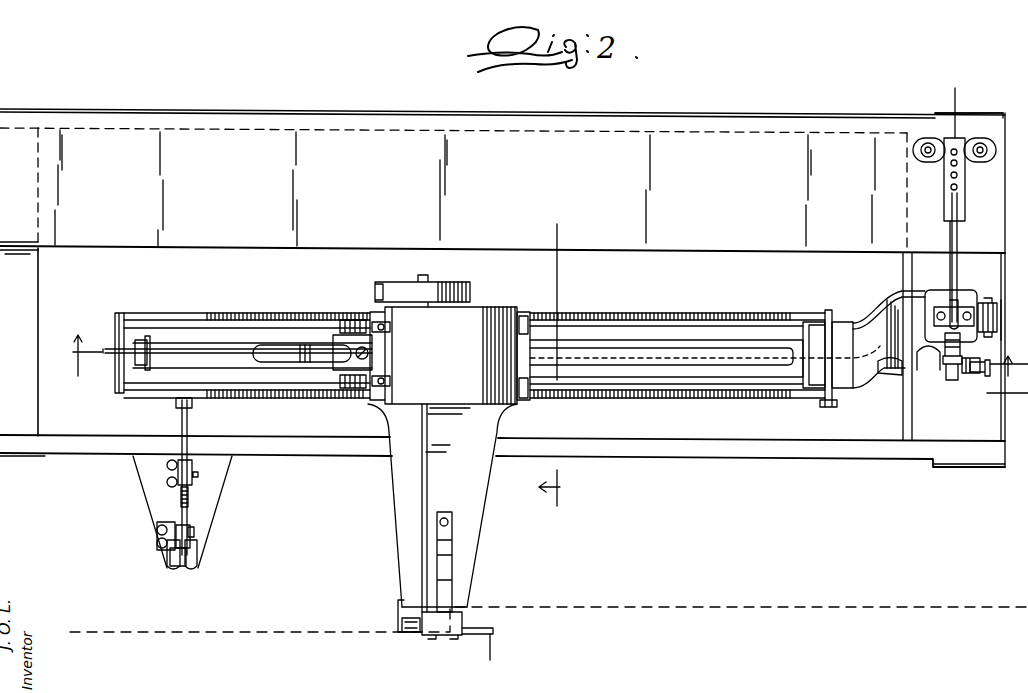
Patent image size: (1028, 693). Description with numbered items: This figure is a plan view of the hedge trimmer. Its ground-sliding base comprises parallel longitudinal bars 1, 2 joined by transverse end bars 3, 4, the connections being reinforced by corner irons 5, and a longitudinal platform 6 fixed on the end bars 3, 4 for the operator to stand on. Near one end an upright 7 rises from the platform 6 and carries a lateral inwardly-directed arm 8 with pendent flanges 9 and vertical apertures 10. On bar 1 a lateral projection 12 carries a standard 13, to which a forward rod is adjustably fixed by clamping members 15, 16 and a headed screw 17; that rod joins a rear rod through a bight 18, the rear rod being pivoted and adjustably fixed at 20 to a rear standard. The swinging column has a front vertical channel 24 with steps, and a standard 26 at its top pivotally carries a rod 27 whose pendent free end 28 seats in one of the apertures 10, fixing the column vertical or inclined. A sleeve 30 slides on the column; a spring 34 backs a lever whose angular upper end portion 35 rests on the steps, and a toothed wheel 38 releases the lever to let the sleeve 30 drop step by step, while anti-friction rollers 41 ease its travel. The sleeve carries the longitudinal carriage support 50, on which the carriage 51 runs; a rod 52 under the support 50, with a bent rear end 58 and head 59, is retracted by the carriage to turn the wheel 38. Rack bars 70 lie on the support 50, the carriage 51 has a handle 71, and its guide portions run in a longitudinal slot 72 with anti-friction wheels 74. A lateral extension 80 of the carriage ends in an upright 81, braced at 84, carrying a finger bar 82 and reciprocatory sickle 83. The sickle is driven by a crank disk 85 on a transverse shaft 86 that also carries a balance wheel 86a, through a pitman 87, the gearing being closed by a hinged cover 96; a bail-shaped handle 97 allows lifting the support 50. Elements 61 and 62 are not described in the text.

The longitudinal bar 1 is at (705, 454).
The longitudinal bar 2 is at (290, 115).
The transverse end bar 3 is at (20, 318).
The transverse end bar 4 is at (70, 364).
The corner iron 5 is at (982, 468).
The longitudinal platform 6 is at (465, 188).
The upright 7 is at (965, 137).
The lateral inwardly-directed arm 8 is at (944, 187).
The pendent flange 9 is at (550, 366).
The vertical aperture 10 is at (958, 175).
The lateral projection 12 is at (208, 505).
The standard 13 is at (175, 523).
The clamping member 15 is at (153, 572).
The clamping member 16 is at (196, 558).
The headed screw 17 is at (227, 542).
The bight 18 is at (190, 510).
The pivotal adjustable connection 20 is at (192, 483).
The vertical channel 24 is at (935, 336).
The standard 26 is at (960, 307).
The rod 27 is at (958, 233).
The pendent free end 28 is at (1014, 306).
The sleeve 30 is at (932, 291).
The spring 34 is at (950, 378).
The angularly-disposed upper end portion 35 is at (968, 360).
The wheel 38 is at (972, 380).
The anti-friction roller 41 is at (996, 320).
The carriage support 50 is at (778, 385).
The carriage 51 is at (556, 346).
The rod 52 is at (741, 366).
The bent rear end of rod 58 is at (130, 354).
The head 59 is at (150, 372).
The hanger rod 61 is at (178, 441).
The threaded section 62 is at (190, 472).
The rack bar 70 is at (745, 313).
The handle 71 is at (293, 363).
The longitudinal slot 72 is at (680, 345).
The anti-friction wheel 74 is at (352, 320).
The lateral extension 80 is at (442, 505).
The upright 81 is at (452, 618).
The finger bar 82 is at (502, 653).
The reciprocatory sickle 83 is at (473, 640).
The brace 84 is at (447, 549).
The crank disk 85 is at (402, 622).
The transverse shaft 86 is at (425, 454).
The balance wheel 86a is at (450, 298).
The pitman 87 is at (412, 634).
The hinged cover 96 is at (443, 355).
The bail-shaped handle 97 is at (835, 335).